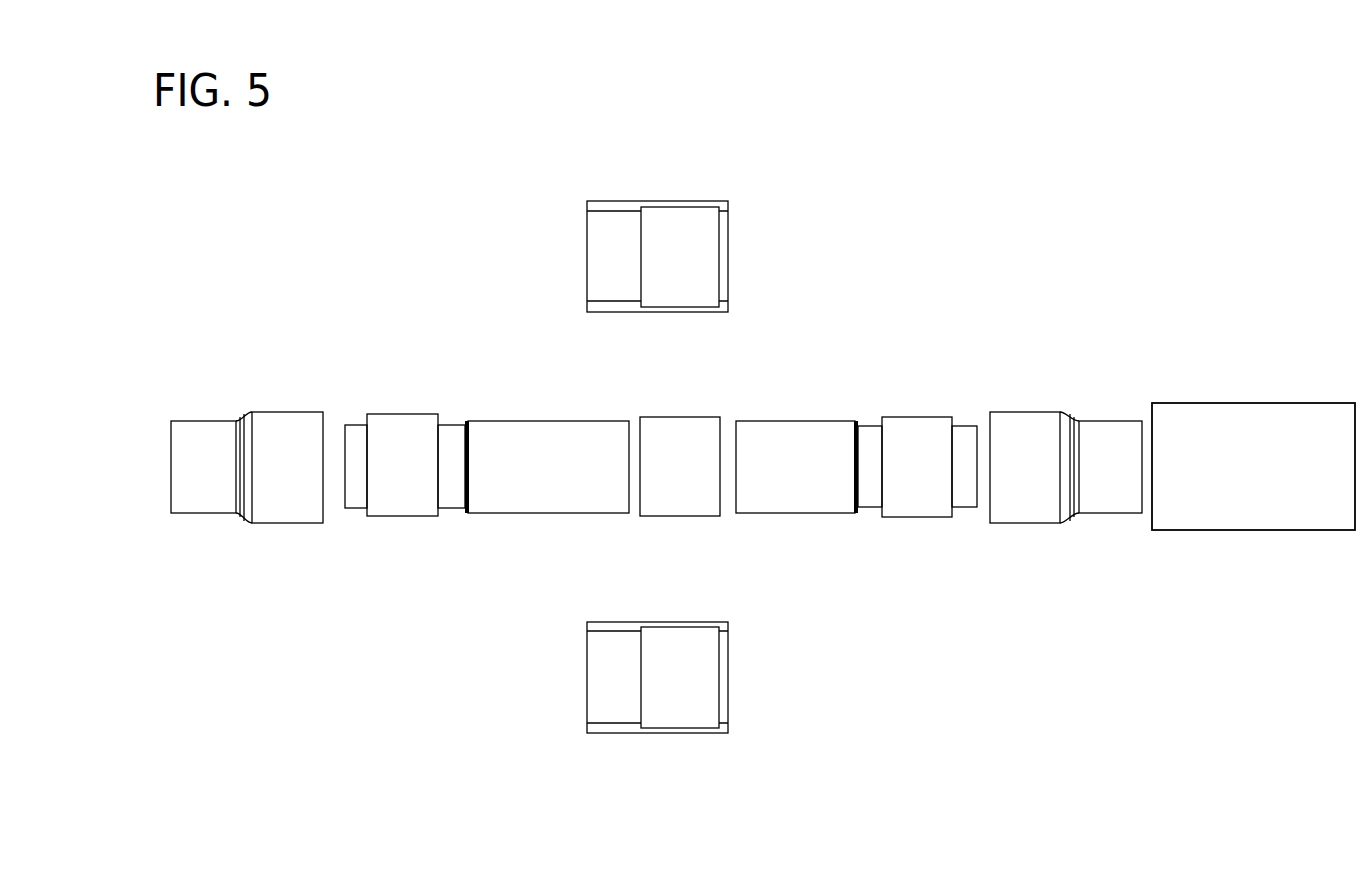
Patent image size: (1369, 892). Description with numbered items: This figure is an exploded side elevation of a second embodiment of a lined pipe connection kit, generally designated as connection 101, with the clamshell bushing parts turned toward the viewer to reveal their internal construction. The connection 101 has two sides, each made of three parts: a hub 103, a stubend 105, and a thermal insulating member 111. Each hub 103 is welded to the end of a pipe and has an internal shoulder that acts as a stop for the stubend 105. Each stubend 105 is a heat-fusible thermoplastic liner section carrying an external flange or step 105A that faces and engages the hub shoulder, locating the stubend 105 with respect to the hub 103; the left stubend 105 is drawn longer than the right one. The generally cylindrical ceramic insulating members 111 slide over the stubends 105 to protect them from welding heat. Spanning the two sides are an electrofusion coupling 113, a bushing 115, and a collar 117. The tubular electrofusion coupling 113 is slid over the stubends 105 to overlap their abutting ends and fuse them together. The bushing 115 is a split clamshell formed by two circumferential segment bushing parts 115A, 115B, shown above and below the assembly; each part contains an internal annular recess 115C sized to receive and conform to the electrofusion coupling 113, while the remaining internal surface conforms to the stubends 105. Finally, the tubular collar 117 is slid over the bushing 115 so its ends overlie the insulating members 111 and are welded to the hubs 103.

The connection 101 is at (1197, 210).
The hub 103 is at (273, 523).
The stubend 105 is at (552, 513).
The external flange 105A is at (467, 423).
The thermal insulating member 111 is at (405, 516).
The electrofusion coupling 113 is at (679, 417).
The bushing 115 is at (722, 455).
The circumferential segment bushing part 115A is at (712, 229).
The circumferential segment bushing part 115B is at (680, 627).
The internal annular recess 115C is at (680, 207).
The collar 117 is at (1253, 530).